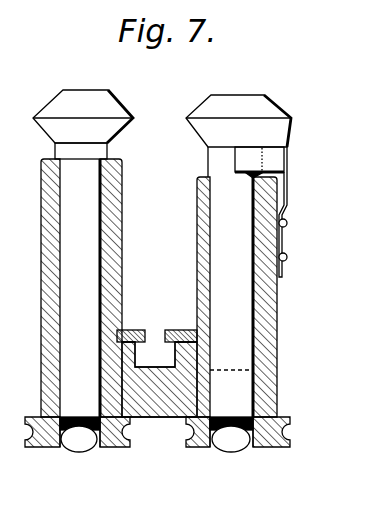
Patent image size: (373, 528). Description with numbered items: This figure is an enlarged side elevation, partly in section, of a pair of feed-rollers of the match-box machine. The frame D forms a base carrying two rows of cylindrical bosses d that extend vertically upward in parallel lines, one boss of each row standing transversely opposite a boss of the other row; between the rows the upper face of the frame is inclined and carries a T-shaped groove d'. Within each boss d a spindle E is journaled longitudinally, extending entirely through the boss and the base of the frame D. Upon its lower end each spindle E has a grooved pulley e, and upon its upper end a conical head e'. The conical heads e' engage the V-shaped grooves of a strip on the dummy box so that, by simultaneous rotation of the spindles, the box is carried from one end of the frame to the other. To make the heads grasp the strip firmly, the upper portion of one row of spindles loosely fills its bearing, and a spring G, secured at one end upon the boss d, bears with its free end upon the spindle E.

The frame D is at (165, 419).
The cylindrical boss d is at (175, 288).
The T-shaped groove d' is at (157, 328).
The spindle E is at (62, 341).
The conical head e' is at (156, 121).
The grooved pulley e is at (175, 434).
The spring G is at (290, 165).